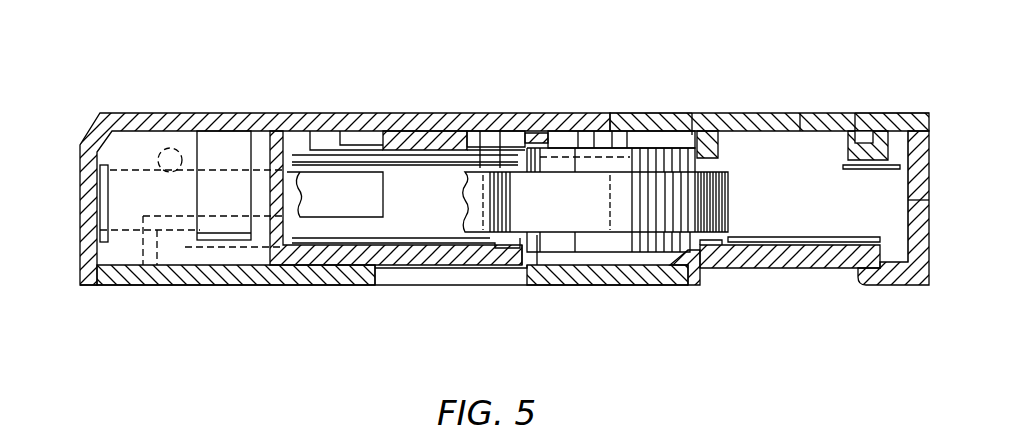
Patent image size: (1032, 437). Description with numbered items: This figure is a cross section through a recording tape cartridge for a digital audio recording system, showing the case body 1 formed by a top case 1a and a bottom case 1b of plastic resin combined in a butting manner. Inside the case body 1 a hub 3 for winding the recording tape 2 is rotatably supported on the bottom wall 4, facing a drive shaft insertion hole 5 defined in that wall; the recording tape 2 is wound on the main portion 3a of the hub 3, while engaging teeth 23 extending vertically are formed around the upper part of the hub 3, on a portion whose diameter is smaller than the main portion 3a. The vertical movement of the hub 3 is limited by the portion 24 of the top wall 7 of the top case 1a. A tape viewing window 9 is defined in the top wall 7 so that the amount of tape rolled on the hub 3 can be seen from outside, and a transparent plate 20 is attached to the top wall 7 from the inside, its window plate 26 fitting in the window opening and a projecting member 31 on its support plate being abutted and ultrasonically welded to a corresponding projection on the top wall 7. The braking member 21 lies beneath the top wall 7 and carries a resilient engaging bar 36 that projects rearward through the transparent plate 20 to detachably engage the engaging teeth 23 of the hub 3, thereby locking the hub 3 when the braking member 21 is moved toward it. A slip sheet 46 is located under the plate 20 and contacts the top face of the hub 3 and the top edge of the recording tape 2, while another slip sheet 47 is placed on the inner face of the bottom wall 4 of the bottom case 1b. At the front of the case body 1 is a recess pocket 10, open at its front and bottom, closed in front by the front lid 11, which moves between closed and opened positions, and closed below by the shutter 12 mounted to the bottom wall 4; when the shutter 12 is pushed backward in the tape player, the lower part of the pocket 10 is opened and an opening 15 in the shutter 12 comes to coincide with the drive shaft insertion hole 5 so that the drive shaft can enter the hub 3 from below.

The case body 1 is at (924, 113).
The top case 1a is at (929, 155).
The bottom case 1b is at (918, 268).
The recording tape 2 is at (83, 178).
The hub 3 is at (600, 215).
The main portion 3a is at (730, 208).
The bottom wall 4 is at (797, 252).
The drive shaft insertion hole 5 is at (683, 257).
The top wall 7 is at (222, 113).
The tape viewing window 9 is at (833, 113).
The recess pocket 10 is at (270, 267).
The front lid 11 is at (97, 226).
The shutter 12 is at (192, 280).
The opening 15 is at (378, 270).
The transparent plate 20 is at (632, 113).
The braking member 21 is at (425, 113).
The engaging teeth 23 is at (692, 133).
The portion 24 is at (560, 113).
The window plate 26 is at (800, 131).
The projecting member 31 is at (323, 113).
The engaging bar 36 is at (507, 113).
The slip sheet 46 is at (421, 165).
The slip sheet 47 is at (835, 237).